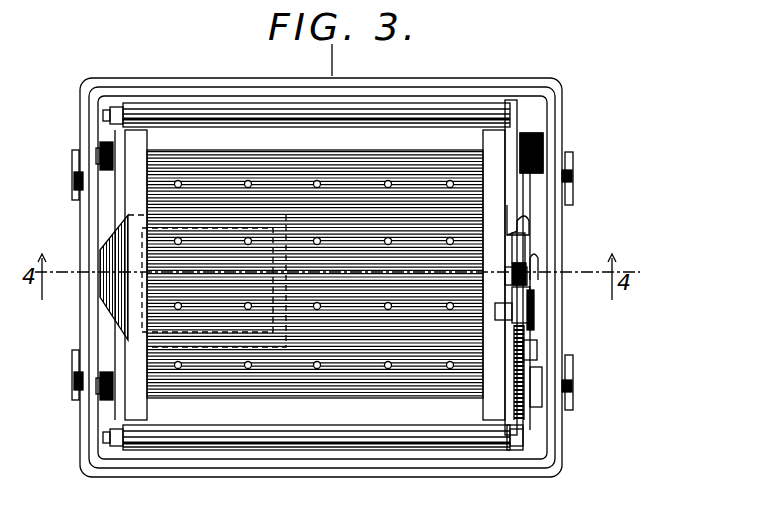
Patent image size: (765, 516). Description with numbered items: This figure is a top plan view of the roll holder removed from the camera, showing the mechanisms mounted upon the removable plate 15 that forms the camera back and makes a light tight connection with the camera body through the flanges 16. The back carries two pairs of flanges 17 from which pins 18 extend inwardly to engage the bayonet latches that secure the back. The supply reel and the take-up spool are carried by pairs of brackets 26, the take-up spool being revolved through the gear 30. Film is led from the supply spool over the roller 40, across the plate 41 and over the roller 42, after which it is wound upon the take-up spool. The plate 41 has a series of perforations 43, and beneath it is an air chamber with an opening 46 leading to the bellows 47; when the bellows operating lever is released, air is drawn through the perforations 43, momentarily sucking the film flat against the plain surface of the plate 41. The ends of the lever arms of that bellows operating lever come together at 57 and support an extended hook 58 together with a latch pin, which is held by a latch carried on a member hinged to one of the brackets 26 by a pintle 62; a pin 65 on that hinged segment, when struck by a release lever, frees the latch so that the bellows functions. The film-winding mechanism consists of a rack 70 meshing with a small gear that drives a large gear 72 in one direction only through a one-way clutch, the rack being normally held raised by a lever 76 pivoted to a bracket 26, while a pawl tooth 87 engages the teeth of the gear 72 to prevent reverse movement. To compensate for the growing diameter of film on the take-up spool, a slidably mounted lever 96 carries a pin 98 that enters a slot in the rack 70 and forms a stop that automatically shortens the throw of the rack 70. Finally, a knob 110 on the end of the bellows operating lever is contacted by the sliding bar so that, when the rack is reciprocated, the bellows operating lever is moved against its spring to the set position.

The removable plate 15 is at (190, 86).
The flanges 16 is at (338, 97).
The flanges 17 is at (74, 162).
The pins 18 is at (78, 182).
The brackets 26 is at (116, 144).
The gear 30 is at (525, 420).
The roller 40 is at (275, 110).
The plate 41 is at (395, 174).
The roller 42 is at (278, 436).
The perforations 43 is at (386, 186).
The opening 46 is at (129, 325).
The bellows 47 is at (110, 252).
The lever arm junction 57 is at (540, 294).
The extended hook 58 is at (534, 264).
The pintle 62 is at (522, 216).
The pin 65 is at (520, 246).
The rack 70 is at (532, 310).
The large gear 72 is at (532, 350).
The lever 76 is at (545, 150).
The tooth 87 is at (534, 364).
The lever 96 is at (496, 312).
The pin 98 is at (526, 332).
The knob 110 is at (520, 282).